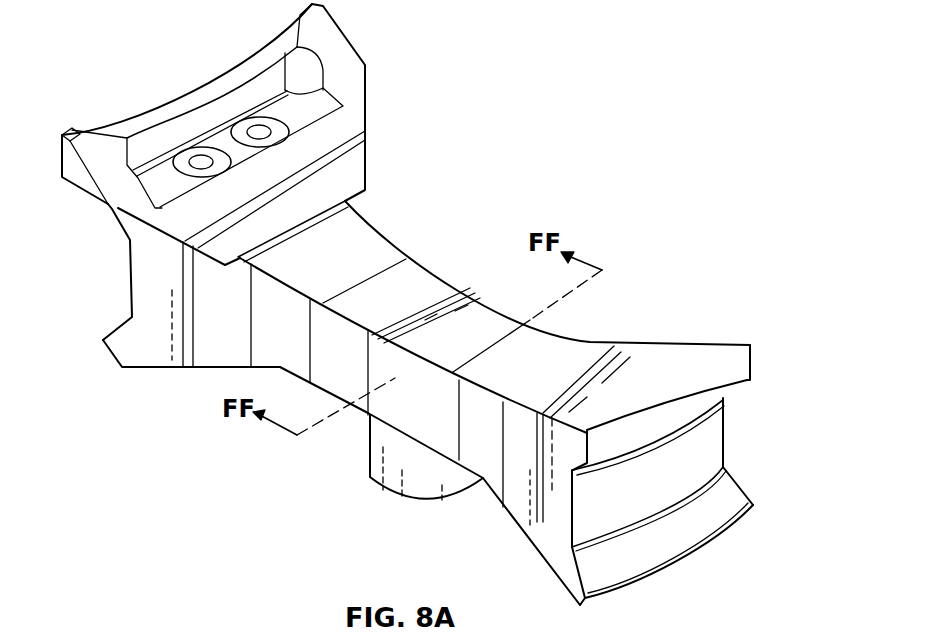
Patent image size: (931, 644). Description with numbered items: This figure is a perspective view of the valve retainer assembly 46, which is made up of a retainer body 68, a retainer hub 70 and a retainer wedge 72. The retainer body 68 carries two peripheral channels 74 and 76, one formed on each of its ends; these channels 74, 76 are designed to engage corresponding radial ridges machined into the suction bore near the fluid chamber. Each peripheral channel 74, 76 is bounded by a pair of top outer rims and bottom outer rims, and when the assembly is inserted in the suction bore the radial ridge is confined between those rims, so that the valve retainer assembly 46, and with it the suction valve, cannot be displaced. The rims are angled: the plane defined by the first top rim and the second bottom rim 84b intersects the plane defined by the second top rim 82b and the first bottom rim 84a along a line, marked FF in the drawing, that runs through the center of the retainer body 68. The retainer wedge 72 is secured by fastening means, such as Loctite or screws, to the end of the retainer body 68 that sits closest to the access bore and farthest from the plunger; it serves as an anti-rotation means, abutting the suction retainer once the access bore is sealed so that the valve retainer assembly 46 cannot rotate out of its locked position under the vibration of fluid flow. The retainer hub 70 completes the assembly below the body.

The retainer wedge 72 is at (347, 168).
The retainer body 68 is at (410, 265).
The valve retainer assembly 46 is at (532, 321).
The second top rim 82b is at (737, 368).
The peripheral channel 74 is at (698, 445).
The second bottom rim 84b is at (683, 547).
The retainer hub 70 is at (388, 472).
The peripheral channel 76 is at (150, 265).
The first bottom rim 84a is at (112, 352).